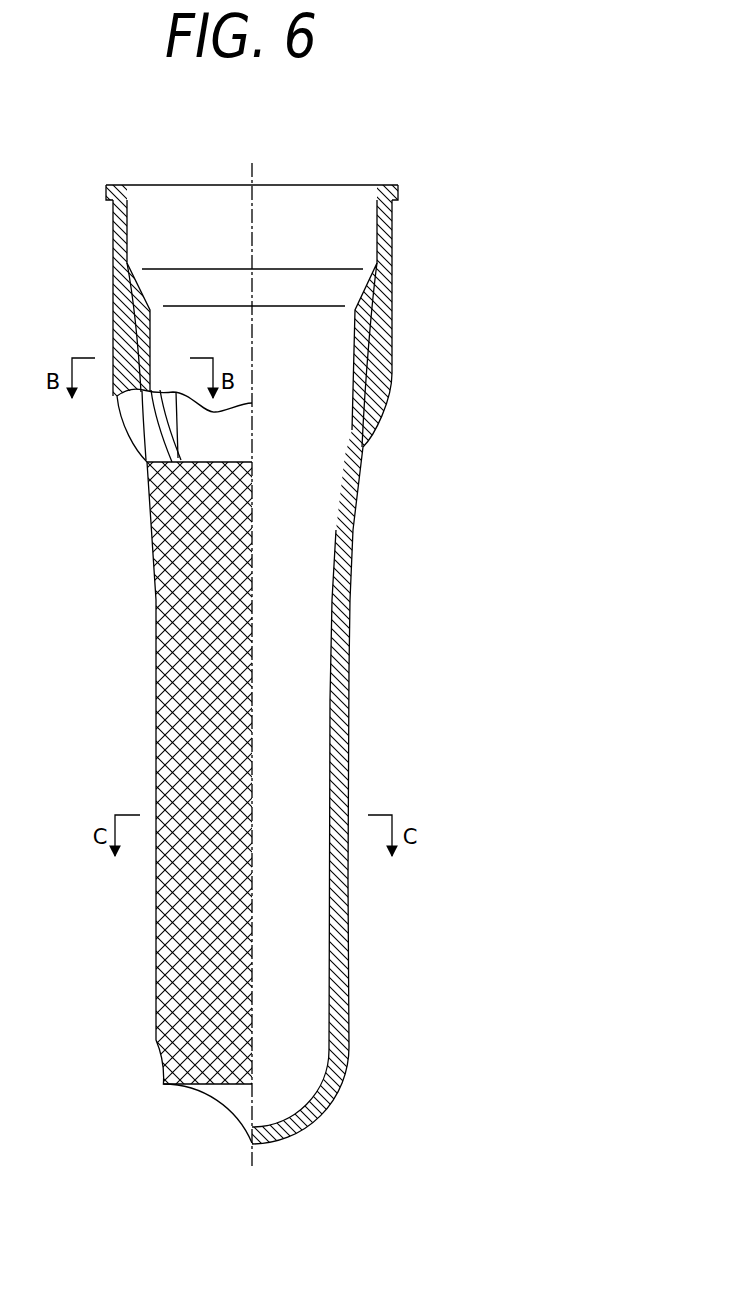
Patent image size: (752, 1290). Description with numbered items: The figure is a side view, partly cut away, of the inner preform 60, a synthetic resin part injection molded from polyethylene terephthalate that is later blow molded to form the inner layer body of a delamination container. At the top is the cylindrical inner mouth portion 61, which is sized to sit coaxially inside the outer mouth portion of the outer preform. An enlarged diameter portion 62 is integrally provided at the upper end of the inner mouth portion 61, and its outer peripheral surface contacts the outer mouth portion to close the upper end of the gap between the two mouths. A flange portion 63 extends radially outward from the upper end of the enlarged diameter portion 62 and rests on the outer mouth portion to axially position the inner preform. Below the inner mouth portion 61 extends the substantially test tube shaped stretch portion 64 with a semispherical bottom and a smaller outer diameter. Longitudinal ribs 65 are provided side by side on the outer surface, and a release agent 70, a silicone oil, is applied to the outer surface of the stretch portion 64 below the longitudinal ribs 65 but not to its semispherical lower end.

The inner preform 60 is at (512, 288).
The inner mouth portion 61 is at (394, 256).
The enlarged diameter portion 62 is at (383, 221).
The flange portion 63 is at (395, 190).
The stretch portion 64 is at (351, 760).
The longitudinal rib 65 is at (114, 326).
The release agent 70 is at (193, 690).